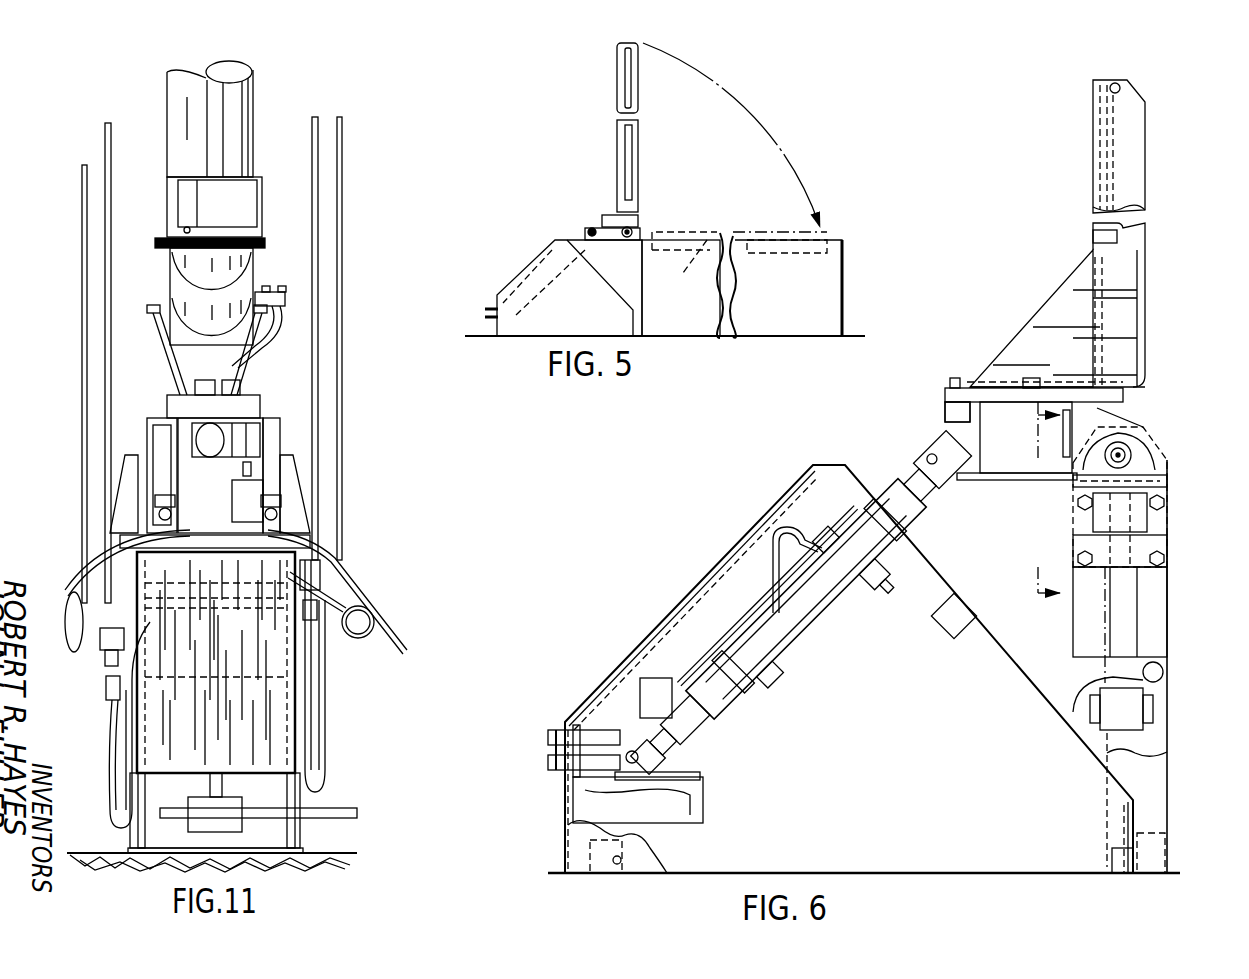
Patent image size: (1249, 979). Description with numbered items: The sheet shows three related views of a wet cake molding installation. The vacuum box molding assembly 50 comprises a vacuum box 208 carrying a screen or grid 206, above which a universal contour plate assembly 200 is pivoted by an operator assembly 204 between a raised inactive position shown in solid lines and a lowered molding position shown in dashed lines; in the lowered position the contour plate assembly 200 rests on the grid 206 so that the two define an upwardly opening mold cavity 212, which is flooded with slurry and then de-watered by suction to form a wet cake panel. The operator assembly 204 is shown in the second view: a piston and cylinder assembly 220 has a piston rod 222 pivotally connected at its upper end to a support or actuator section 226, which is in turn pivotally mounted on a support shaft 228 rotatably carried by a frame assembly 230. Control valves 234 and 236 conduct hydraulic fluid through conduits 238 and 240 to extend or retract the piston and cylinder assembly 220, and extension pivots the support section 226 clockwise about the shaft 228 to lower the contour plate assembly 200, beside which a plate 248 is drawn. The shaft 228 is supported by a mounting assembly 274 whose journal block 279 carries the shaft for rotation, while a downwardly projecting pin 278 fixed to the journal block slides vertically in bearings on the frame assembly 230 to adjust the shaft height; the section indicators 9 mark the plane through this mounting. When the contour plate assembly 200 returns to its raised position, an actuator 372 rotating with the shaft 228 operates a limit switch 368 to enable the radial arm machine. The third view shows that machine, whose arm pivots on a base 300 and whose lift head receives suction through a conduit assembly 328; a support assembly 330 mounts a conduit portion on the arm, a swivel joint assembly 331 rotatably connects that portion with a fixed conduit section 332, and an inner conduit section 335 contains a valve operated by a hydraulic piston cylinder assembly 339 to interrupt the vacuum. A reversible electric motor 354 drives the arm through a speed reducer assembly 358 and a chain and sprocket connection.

In FIG. 6, the section line 9- 9 is at (1053, 497).
In FIG. 5, the vacuum box molding assembly 50 is at (862, 108).
In FIG. 5, the universal contour plate assembly 200 is at (607, 99).
In FIG. 6, the universal contour plate assembly 200 is at (1092, 230).
In FIG. 5, the operator assembly 204 is at (528, 275).
In FIG. 6, the operator assembly 204 is at (723, 617).
In FIG. 5, the screen or grid 206 is at (755, 267).
In FIG. 5, the vacuum box 208 is at (812, 305).
In FIG. 5, the mold cavity 212 is at (681, 284).
In FIG. 6, the piston and cylinder assembly 220 is at (787, 640).
In FIG. 6, the piston rod 222 is at (900, 512).
In FIG. 5, the support or actuator section 226 is at (587, 230).
In FIG. 6, the support or actuator section 226 is at (948, 432).
In FIG. 5, the support shaft 228 is at (637, 228).
In FIG. 6, the support shaft 228 is at (1123, 440).
In FIG. 6, the frame assembly 230 is at (1082, 627).
In FIG. 6, the control valve 234 is at (690, 725).
In FIG. 6, the control valve 236 is at (827, 543).
In FIG. 6, the conduit 238 is at (763, 672).
In FIG. 6, the conduit 240 is at (882, 577).
In FIG. 6, the gusset plate 248 is at (1093, 260).
In FIG. 6, the mounting assembly 274 is at (1152, 515).
In FIG. 6, the downwardly projecting pin 278 is at (1100, 545).
In FIG. 6, the journal block 279 is at (1137, 455).
In FIG. 11, the base 300 is at (283, 743).
In FIG. 11, the conduit assembly 328 is at (150, 277).
In FIG. 11, the support assembly 330 is at (178, 377).
In FIG. 11, the swivel joint assembly 331 is at (167, 207).
In FIG. 11, the fixed section of conduit 332 is at (178, 153).
In FIG. 11, the inner section of conduit 335 is at (180, 297).
In FIG. 11, the hydraulic piston cylinder assembly 339 is at (270, 297).
In FIG. 11, the reversible electric motor 354 is at (233, 497).
In FIG. 11, the speed reducer assembly 358 is at (257, 431).
In FIG. 6, the limit switch 368 is at (1100, 513).
In FIG. 6, the actuator 372 is at (1073, 483).